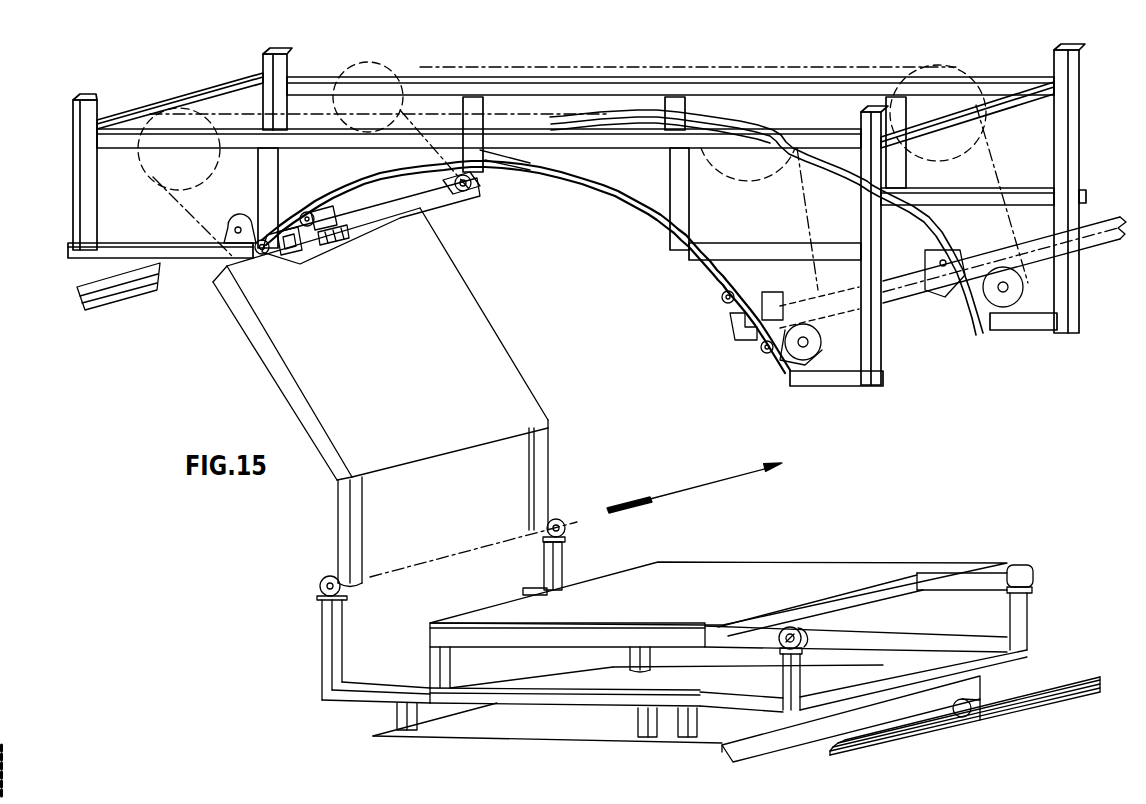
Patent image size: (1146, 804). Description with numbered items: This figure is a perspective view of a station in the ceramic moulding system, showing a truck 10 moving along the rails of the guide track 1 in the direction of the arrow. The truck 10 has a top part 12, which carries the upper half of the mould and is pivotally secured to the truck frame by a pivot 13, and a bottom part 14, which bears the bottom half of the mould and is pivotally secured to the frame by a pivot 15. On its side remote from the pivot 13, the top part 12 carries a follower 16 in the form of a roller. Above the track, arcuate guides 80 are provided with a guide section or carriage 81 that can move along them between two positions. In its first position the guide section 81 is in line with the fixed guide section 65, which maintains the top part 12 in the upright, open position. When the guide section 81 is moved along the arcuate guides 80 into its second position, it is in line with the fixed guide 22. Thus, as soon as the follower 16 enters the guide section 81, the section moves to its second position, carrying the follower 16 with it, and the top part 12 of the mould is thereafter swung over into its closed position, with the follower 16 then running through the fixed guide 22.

The guide track 1 is at (823, 753).
The truck 10 is at (550, 698).
The top part 12 is at (549, 445).
The pivot 13 is at (319, 584).
The bottom part 14 is at (762, 573).
The pivot 15 is at (780, 646).
The follower 16 is at (292, 254).
The fixed guide 22 is at (1100, 228).
The fixed guide section 65 is at (115, 288).
The arcuate track 80 is at (640, 205).
The guide section 81 is at (463, 205).